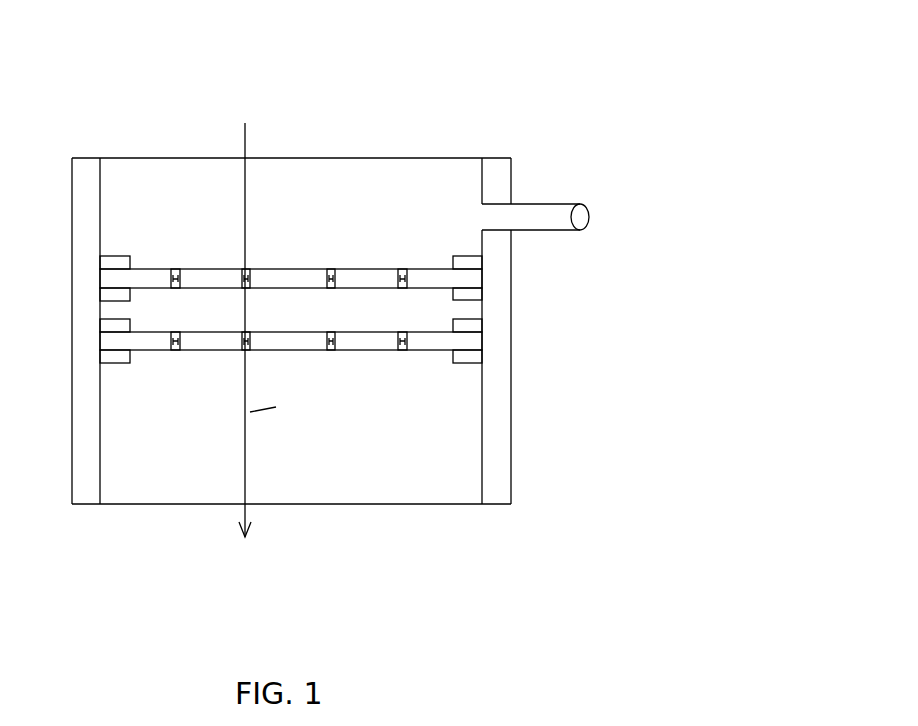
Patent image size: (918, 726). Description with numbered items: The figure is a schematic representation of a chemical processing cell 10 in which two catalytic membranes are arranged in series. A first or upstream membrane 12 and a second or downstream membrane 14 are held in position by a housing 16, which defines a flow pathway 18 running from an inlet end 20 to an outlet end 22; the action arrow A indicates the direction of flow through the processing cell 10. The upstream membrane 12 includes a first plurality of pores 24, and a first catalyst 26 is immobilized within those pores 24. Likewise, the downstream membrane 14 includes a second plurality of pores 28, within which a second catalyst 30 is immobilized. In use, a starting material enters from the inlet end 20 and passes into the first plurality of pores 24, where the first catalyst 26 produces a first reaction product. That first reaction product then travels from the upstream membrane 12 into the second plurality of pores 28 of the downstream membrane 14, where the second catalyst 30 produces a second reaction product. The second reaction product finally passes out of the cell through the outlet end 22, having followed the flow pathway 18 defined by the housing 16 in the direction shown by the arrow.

The processing cell 10 is at (328, 303).
The first or upstream membrane 12 is at (362, 277).
The second or downstream membrane 14 is at (362, 351).
The housing 16 is at (498, 407).
The flow pathway 18 is at (158, 460).
The inlet end 20 is at (340, 158).
The outlet end 22 is at (333, 505).
The first plurality of pores 24 is at (181, 280).
The first catalyst 26 is at (400, 284).
The second plurality of pores 28 is at (242, 340).
The second catalyst 30 is at (343, 312).